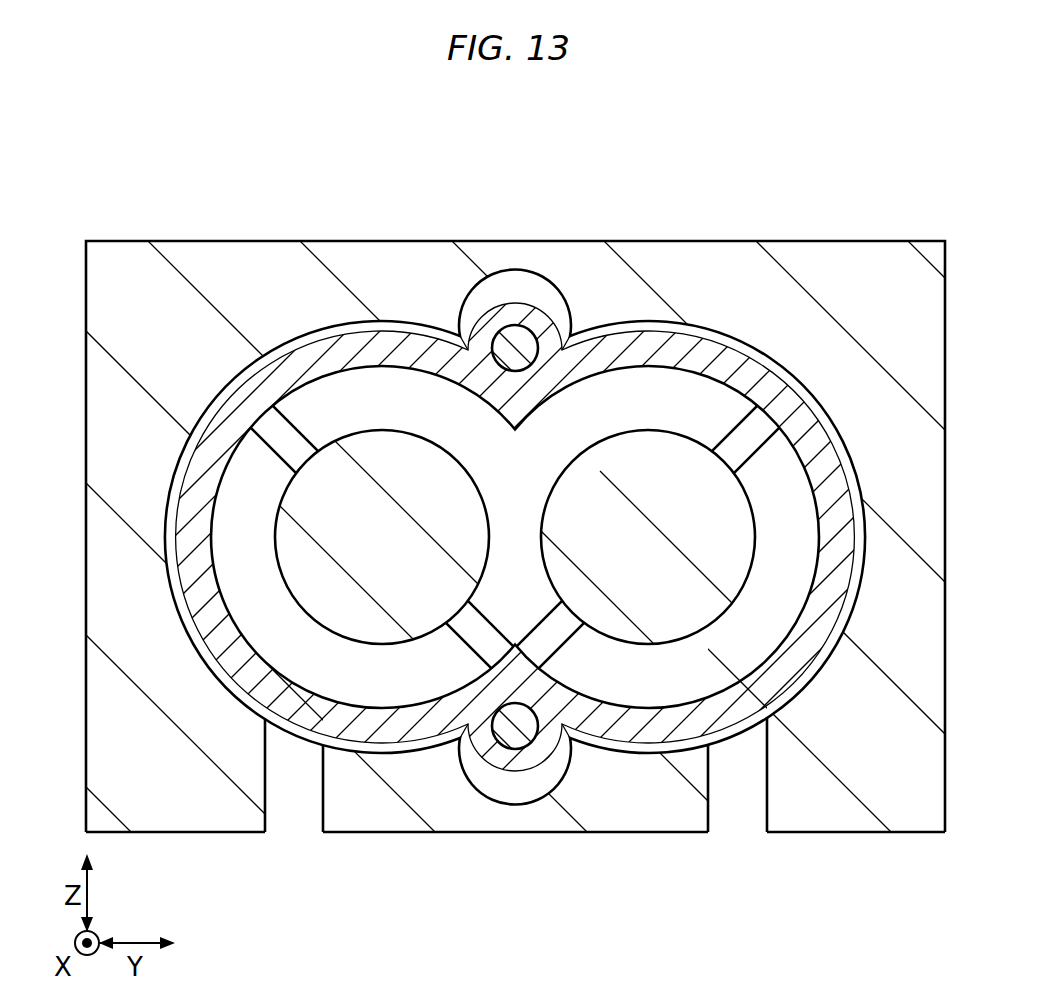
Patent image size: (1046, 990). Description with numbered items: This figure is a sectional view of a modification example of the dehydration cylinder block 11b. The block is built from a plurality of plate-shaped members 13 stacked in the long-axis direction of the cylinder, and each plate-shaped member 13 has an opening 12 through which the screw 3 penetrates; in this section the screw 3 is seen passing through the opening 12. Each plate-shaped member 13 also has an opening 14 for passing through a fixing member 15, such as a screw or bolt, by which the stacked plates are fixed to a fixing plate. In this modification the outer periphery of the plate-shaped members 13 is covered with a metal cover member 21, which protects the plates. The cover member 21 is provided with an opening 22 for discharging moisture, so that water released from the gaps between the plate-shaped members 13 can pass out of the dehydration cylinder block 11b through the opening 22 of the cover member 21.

The dehydration cylinder block 11b is at (848, 174).
The cover member 21 is at (776, 287).
The opening 22 is at (266, 776).
The opening 12 is at (650, 380).
The plate-shaped member 13 is at (340, 355).
The opening 14 is at (512, 338).
The fixing member 15 is at (534, 350).
The screw 3 is at (370, 622).